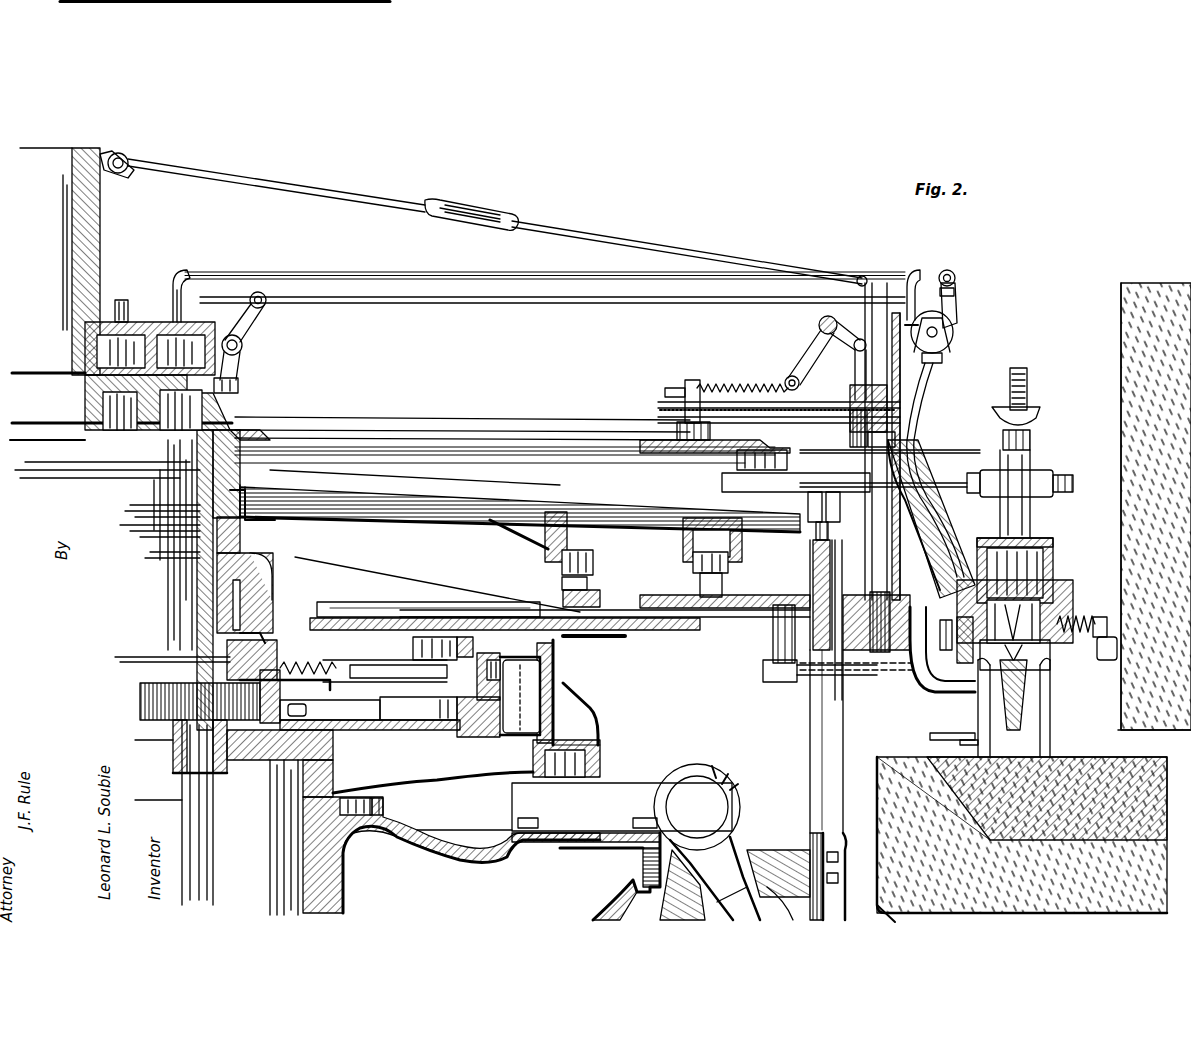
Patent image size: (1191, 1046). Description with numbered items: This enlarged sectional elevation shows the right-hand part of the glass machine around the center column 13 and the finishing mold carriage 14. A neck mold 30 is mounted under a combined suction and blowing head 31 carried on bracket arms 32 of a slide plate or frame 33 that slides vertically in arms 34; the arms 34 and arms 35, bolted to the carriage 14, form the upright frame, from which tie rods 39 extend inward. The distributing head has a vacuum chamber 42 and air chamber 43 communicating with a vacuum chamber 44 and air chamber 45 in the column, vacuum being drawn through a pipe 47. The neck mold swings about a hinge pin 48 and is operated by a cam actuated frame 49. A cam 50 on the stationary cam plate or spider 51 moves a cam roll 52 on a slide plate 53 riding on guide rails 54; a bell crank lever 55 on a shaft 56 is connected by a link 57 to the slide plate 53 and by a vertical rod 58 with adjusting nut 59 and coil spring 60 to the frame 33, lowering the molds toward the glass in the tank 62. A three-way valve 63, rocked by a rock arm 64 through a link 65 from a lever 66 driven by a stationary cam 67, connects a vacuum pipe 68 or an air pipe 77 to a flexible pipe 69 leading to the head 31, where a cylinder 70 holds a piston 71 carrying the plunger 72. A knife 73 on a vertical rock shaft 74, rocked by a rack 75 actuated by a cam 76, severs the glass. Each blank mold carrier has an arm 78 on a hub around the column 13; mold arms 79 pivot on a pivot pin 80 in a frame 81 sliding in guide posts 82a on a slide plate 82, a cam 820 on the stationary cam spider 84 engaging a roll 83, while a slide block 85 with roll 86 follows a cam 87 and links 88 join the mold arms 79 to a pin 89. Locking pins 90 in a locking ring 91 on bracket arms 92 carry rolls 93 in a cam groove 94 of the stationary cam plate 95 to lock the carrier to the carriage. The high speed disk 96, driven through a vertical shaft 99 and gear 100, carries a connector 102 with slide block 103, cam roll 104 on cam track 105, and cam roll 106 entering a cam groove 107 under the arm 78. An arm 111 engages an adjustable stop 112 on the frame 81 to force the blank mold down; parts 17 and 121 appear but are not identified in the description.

The center column 13 is at (205, 544).
The mold carriage 14 is at (769, 840).
The shaft 17 is at (693, 793).
The neck mold 30 is at (1050, 655).
The combined suction and blowing head 31 is at (1060, 605).
The bracket arms 32 is at (955, 530).
The slide plate or frame 33 is at (870, 440).
The vertical arms 34 is at (890, 285).
The arms 35 is at (810, 730).
The tie rods 39 is at (585, 234).
The vacuum chamber 42 is at (100, 352).
The air chamber 43 is at (185, 335).
The vacuum chamber 44 is at (108, 412).
The air chamber 45 is at (185, 412).
The pipe 47 is at (152, 322).
The hinge pin 48 is at (963, 664).
The cam actuated frame 49 is at (1075, 622).
The cam 50 is at (672, 436).
The stationary cam plate or spider 51 is at (503, 416).
The cam roll 52 is at (686, 455).
The slide plate 53 is at (740, 412).
The guide rails 54 is at (850, 400).
The bell crank lever 55 is at (805, 352).
The shaft 56 is at (818, 322).
The link 57 is at (700, 383).
The vertical rod 58 is at (855, 360).
The adjusting nut 59 is at (850, 425).
The coil spring 60 is at (750, 385).
The tank 62 is at (895, 757).
The three-way valve 63 is at (955, 340).
The rock arm 64 is at (958, 315).
The link 65 is at (486, 304).
The lever 66 is at (252, 318).
The stationary cam 67 is at (238, 386).
The pipe 68 is at (122, 298).
The flexible pipe 69 is at (933, 370).
The cylinder 70 is at (1053, 560).
The piston 71 is at (1022, 600).
The plunger 72 is at (1027, 680).
The knife 73 is at (958, 733).
The vertical rock shaft 74 is at (1027, 383).
The rack 75 is at (1057, 478).
The cam 76 is at (770, 492).
The pipe 77 is at (842, 273).
The arm 78 is at (476, 612).
The mold arms 79 is at (825, 690).
The pivot pin 80 is at (878, 592).
The frame 81 is at (812, 520).
The slide plate 82 is at (690, 630).
The guide posts 82a is at (810, 525).
The roll 83 is at (593, 562).
The stationary cam spider 84 is at (506, 498).
The slide block 85 is at (746, 612).
The roll 86 is at (696, 570).
The cam 87 is at (683, 550).
The links 88 is at (915, 672).
The pin 89 is at (765, 666).
The locking pins 90 is at (560, 653).
The locking ring 91 is at (555, 667).
The bracket arms 92 is at (597, 724).
The roll 93 is at (480, 678).
The cam groove 94 is at (495, 660).
The stationary cam plate 95 is at (460, 770).
The high speed disk 96 is at (322, 664).
The vertical shaft 99 is at (196, 858).
The gear 100 is at (156, 683).
The connector 102 is at (440, 666).
The slide block 103 is at (390, 717).
The cam roll 104 is at (436, 713).
The cam track 105 is at (470, 730).
The cam roll 106 is at (412, 638).
The cam groove 107 is at (372, 664).
The arm 111 is at (812, 500).
The stop 112 is at (836, 500).
The block 121 is at (602, 758).
The cam 820 is at (568, 548).